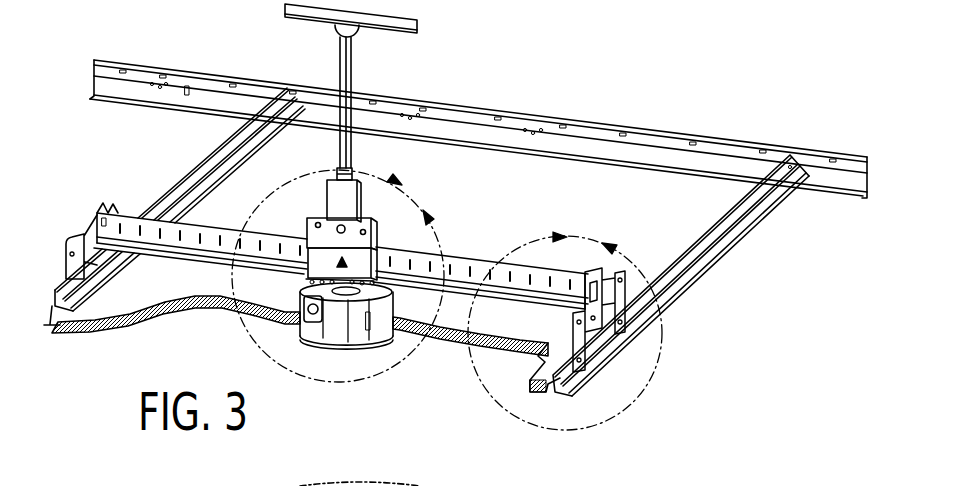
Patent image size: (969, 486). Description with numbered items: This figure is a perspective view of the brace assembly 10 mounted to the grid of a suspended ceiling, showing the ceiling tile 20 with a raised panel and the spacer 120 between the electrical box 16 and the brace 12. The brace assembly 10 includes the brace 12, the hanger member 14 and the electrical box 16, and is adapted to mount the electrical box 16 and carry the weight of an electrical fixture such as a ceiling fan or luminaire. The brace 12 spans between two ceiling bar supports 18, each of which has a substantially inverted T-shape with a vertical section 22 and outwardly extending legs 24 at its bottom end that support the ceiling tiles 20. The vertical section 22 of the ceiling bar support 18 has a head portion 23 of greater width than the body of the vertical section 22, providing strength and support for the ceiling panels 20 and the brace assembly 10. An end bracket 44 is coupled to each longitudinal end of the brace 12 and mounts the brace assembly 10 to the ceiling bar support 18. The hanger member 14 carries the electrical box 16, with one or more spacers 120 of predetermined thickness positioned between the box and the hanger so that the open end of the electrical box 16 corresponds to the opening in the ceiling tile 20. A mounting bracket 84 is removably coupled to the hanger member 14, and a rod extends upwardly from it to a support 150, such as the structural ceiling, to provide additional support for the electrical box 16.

The brace assembly 10 is at (468, 232).
The brace 12 is at (129, 203).
The hanger member 14 is at (386, 211).
The electrical box 16 is at (291, 345).
The ceiling bar support 18 is at (686, 233).
The ceiling tile 20 is at (80, 333).
The vertical section 22 is at (742, 213).
The head portion 23 is at (705, 238).
The outwardly extending legs 24 is at (683, 290).
The end bracket 44 is at (591, 254).
The mounting bracket 84 is at (322, 194).
The spacer 120 is at (342, 300).
The support 150 is at (392, 32).